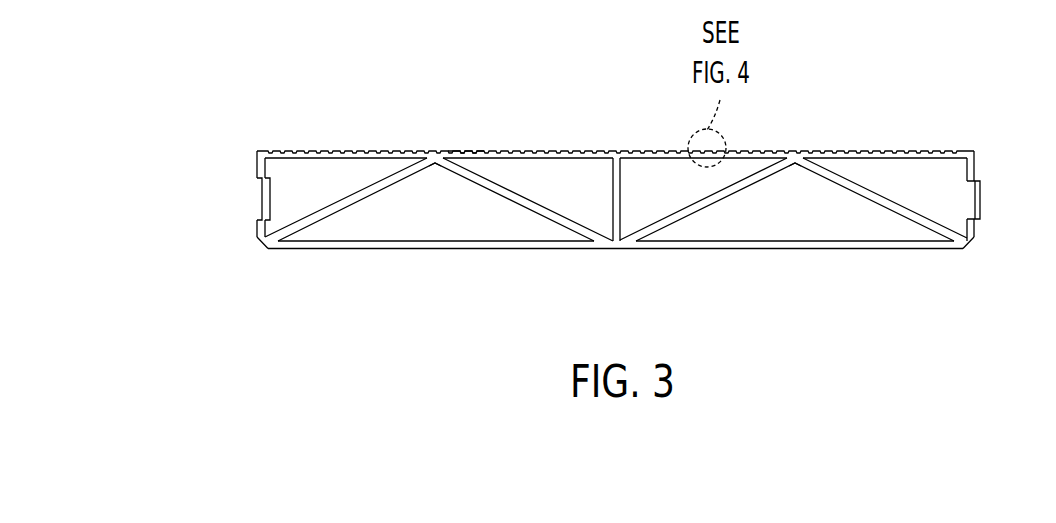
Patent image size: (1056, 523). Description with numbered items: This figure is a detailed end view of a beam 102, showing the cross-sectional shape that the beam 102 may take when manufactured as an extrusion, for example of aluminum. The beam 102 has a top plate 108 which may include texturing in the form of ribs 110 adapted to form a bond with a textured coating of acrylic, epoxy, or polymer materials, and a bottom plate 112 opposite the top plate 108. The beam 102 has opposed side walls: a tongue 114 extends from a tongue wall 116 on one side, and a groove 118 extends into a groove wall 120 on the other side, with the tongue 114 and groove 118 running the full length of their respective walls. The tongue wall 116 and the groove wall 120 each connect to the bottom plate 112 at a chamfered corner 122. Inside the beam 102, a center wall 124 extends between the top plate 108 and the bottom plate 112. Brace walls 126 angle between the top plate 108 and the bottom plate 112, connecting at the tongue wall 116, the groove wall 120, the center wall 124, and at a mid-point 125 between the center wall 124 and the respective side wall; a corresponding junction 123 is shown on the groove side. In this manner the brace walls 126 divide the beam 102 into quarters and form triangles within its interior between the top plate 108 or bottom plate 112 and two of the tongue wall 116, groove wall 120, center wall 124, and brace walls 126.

The beam 102 is at (770, 103).
The top plate 108 is at (606, 149).
The ribs 110 is at (467, 128).
The bottom plate 112 is at (677, 249).
The tongue 114 is at (978, 208).
The tongue wall 116 is at (973, 173).
The groove 118 is at (262, 198).
The groove wall 120 is at (257, 167).
The chamfered corner 122 is at (267, 237).
The left apex junction 123 is at (435, 149).
The center wall 124 is at (620, 197).
The mid-point 125 is at (797, 162).
The brace walls 126 is at (392, 180).